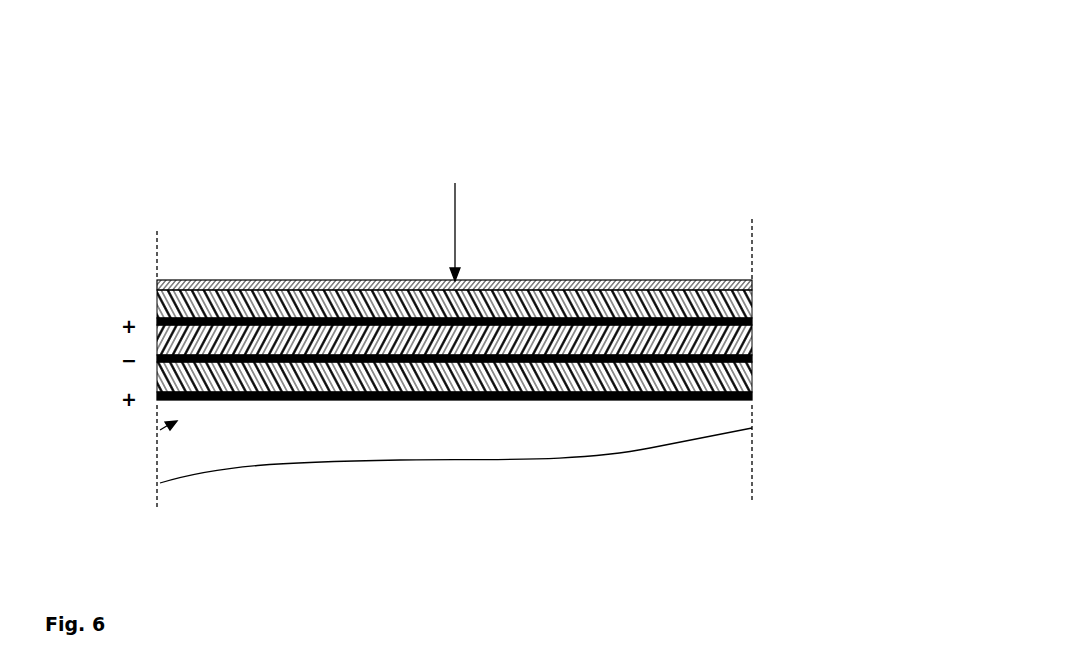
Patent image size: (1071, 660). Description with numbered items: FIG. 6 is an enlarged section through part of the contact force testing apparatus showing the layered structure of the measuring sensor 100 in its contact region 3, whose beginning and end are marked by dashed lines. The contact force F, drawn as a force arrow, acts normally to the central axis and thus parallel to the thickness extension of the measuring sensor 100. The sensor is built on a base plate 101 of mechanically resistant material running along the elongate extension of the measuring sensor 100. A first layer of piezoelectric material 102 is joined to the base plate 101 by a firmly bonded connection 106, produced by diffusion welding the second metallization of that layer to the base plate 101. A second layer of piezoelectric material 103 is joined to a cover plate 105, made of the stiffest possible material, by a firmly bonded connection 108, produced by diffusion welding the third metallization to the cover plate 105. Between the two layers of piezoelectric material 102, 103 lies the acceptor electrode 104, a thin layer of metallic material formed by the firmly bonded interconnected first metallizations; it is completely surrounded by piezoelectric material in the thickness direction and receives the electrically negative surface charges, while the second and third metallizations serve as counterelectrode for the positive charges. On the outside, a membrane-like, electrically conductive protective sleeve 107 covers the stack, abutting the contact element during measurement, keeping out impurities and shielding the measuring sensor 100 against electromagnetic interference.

The measuring sensor 100 is at (240, 189).
The protective sleeve 107 is at (311, 281).
The cover plate 105 is at (557, 300).
The firmly bonded connection 108 is at (752, 323).
The second layer of piezoelectric material 103 is at (578, 340).
The acceptor electrode 104 is at (752, 357).
The first layer of piezoelectric material 102 is at (391, 380).
The firmly bonded connection 106 is at (752, 390).
The base plate 101 is at (252, 422).
The contact region 3 is at (160, 430).